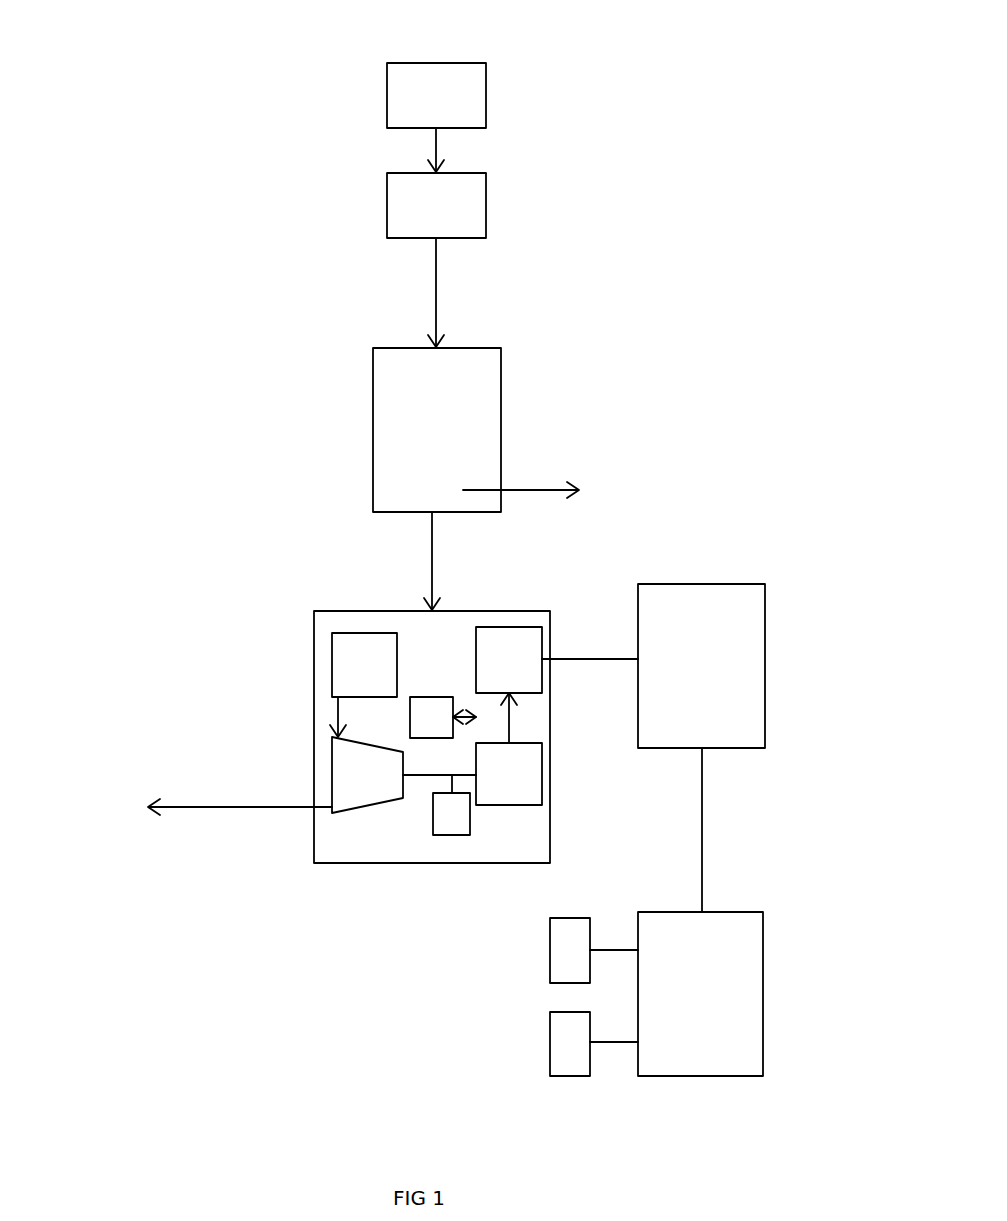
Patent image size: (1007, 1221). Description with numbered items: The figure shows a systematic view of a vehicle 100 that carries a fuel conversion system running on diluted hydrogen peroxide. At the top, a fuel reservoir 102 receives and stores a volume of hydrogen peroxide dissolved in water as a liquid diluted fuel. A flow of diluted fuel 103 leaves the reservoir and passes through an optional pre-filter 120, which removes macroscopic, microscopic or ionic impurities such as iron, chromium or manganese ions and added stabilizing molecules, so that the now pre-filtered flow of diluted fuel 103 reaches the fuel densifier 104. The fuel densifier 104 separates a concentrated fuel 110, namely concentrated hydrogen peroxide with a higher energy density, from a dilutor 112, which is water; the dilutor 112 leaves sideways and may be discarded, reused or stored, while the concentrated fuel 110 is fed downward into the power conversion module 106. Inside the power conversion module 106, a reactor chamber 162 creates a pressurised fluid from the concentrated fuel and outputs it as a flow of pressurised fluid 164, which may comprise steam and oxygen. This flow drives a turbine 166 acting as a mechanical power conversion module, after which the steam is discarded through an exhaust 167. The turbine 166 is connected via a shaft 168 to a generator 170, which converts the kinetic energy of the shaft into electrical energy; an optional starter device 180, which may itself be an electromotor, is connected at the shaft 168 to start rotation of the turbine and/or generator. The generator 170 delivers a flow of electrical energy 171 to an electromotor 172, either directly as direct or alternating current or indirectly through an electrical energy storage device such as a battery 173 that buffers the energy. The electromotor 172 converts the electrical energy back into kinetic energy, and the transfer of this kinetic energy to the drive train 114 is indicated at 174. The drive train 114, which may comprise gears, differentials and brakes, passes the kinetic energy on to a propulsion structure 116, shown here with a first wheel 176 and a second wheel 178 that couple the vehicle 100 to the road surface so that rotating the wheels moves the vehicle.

The vehicle 100 is at (88, 20).
The fuel reservoir 102 is at (486, 85).
The flow of diluted fuel 103 is at (436, 150).
The fuel densifier 104 is at (501, 379).
The power conversion module 106 is at (314, 652).
The concentrated fuel 110 is at (432, 553).
The dilutor 112 is at (527, 490).
The drive train 114 is at (667, 584).
The propulsion structure 116 is at (763, 988).
The pre-filter 120 is at (486, 203).
The reactor chamber 162 is at (332, 643).
The flow of pressurised fluid 164 is at (338, 714).
The turbine 166 is at (332, 785).
The exhaust 167 is at (200, 807).
The shaft 168 is at (438, 775).
The generator 170 is at (512, 806).
The flow of electrical energy 171 is at (511, 732).
The electromotor 172 is at (500, 627).
The battery 173 is at (432, 697).
The kinetic energy transfer 174 is at (584, 659).
The first wheel 176 is at (550, 978).
The second wheel 178 is at (550, 1048).
The starter device 180 is at (452, 835).